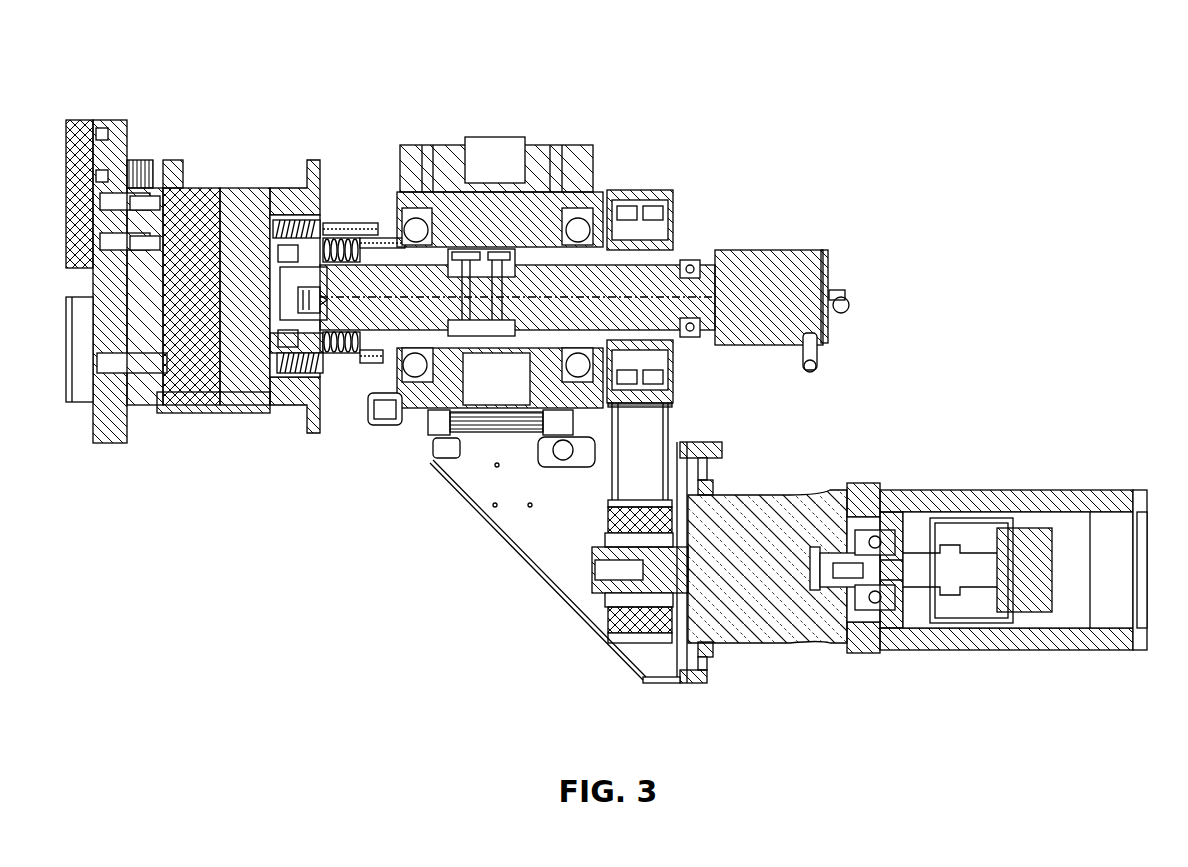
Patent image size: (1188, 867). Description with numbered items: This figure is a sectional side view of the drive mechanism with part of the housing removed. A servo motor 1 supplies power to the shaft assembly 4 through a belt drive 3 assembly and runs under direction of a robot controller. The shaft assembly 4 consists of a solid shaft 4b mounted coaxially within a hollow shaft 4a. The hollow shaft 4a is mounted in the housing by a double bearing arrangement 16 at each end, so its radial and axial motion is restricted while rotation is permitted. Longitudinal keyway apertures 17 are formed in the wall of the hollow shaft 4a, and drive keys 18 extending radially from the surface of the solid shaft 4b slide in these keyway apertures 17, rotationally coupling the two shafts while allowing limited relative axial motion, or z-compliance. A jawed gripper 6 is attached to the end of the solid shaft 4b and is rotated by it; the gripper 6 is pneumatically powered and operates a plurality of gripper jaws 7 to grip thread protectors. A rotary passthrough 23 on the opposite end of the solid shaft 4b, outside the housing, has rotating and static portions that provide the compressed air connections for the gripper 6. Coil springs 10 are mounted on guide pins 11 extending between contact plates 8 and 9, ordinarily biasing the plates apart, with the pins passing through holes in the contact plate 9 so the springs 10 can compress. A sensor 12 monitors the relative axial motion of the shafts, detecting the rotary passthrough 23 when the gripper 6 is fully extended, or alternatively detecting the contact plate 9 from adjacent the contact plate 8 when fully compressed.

The servo motor 1 is at (1070, 533).
The belt drive 3 is at (678, 434).
The shaft assembly 4 is at (608, 266).
The hollow shaft 4a is at (645, 267).
The solid shaft 4b is at (727, 293).
The jawed gripper 6 is at (182, 220).
The gripper jaws 7 is at (70, 402).
The contact plate 8 is at (370, 378).
The contact plate 9 is at (313, 410).
The coil springs 10 is at (327, 222).
The guide pins 11 is at (350, 236).
The sensor 12 is at (382, 427).
The double bearing arrangement 16 is at (572, 373).
The keyway apertures 17 is at (533, 260).
The drive keys 18 is at (480, 263).
The rotary passthrough 23 is at (830, 278).